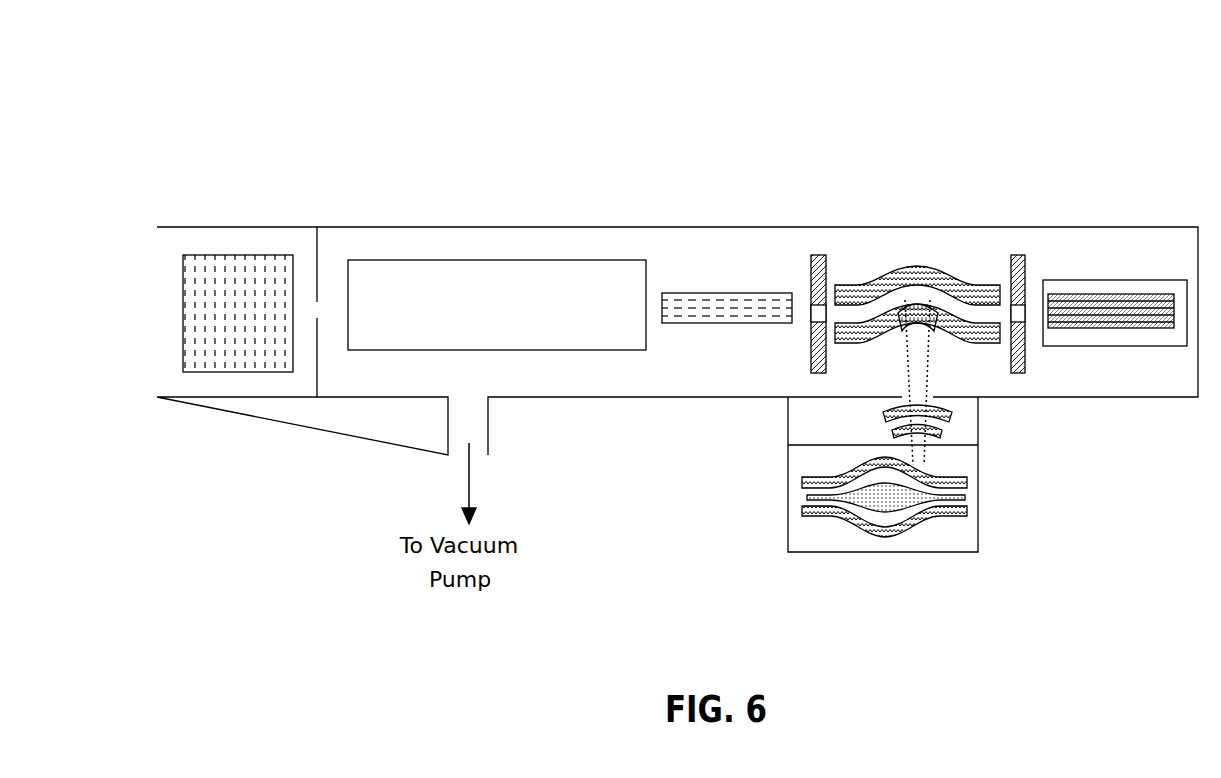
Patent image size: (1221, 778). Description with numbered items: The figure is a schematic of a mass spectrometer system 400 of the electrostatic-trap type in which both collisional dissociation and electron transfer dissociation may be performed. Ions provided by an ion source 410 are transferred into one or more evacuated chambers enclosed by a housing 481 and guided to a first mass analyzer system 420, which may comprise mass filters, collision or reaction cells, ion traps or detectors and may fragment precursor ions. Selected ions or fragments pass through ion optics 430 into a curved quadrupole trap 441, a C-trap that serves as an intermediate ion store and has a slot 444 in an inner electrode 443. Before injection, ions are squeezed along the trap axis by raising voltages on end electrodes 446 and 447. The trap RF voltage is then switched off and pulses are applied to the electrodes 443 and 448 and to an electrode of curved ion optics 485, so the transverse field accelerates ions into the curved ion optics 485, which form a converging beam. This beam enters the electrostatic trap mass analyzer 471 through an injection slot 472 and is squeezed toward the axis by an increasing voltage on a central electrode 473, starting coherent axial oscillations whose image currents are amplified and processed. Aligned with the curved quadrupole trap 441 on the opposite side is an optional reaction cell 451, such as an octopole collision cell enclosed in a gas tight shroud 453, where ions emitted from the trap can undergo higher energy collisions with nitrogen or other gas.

The mass spectrometer system 400 is at (715, 51).
The ion source 410 is at (226, 255).
The first mass analyzer system 420 is at (482, 352).
The ion optics 430 is at (746, 293).
The curved quadrupole trap 441 is at (907, 275).
The inner electrode 443 is at (917, 346).
The slot 444 is at (895, 342).
The end electrode 446 is at (811, 270).
The end electrode 447 is at (1010, 266).
The electrode 448 is at (958, 284).
The reaction cell 451 is at (1112, 293).
The gas tight shroud 453 is at (1115, 288).
The electrostatic trap mass analyzer 471 is at (956, 516).
The injection slot 472 is at (925, 468).
The central electrode 473 is at (965, 492).
The housing 481 is at (385, 227).
The curved ion optics 485 is at (852, 419).